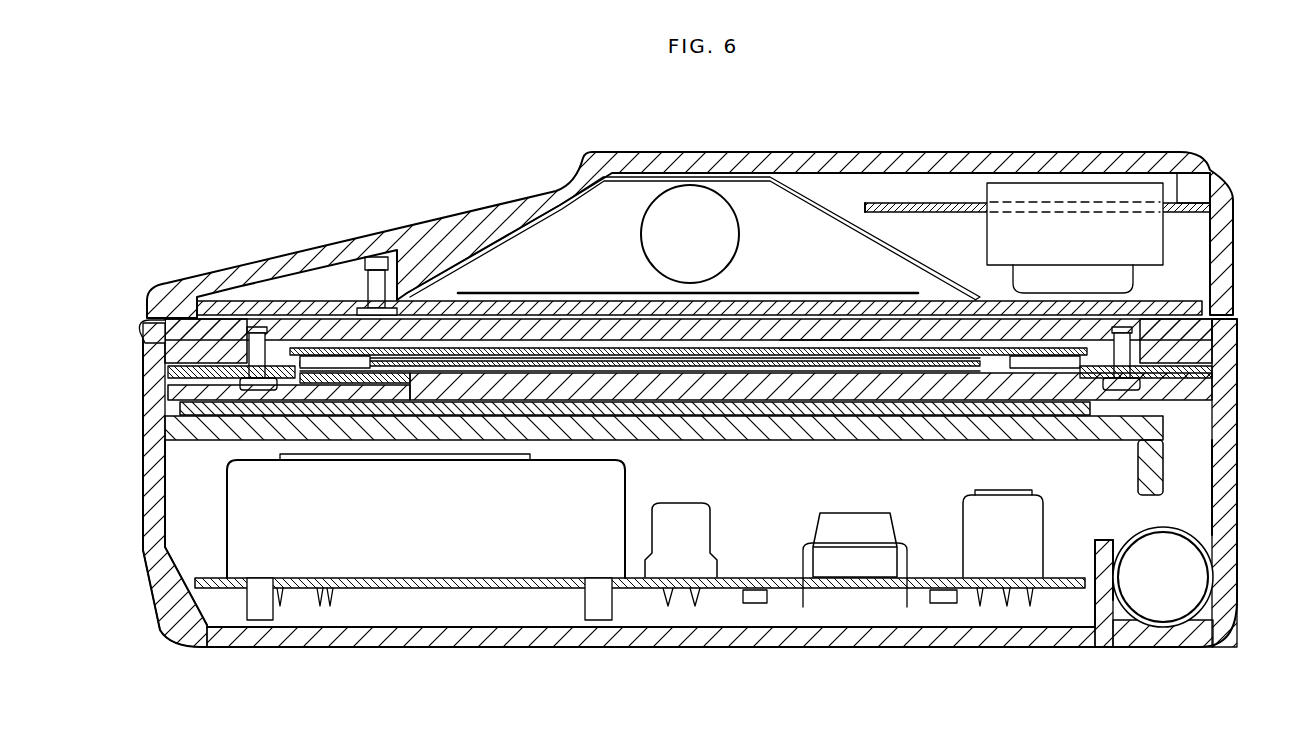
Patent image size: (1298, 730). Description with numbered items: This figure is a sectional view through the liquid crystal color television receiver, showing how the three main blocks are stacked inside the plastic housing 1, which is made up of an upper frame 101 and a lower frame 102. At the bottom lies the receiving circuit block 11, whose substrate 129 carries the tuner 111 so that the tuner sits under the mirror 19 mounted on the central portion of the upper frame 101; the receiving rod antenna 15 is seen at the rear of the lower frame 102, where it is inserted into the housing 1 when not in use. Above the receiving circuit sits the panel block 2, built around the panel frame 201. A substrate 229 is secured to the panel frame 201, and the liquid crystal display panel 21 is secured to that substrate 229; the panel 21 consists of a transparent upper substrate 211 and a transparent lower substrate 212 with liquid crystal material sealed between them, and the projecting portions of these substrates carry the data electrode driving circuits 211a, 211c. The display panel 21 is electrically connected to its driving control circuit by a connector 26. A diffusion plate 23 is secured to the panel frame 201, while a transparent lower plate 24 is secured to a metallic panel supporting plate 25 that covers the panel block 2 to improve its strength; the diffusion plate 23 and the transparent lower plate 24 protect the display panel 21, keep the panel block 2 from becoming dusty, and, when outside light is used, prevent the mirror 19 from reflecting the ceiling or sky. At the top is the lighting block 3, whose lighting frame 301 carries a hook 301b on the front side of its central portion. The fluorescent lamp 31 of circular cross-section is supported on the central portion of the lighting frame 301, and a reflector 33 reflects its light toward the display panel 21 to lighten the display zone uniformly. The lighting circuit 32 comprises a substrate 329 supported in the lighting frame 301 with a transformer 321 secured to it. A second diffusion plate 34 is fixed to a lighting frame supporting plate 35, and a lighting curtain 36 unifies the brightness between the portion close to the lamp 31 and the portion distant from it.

The housing 1 is at (721, 648).
The panel block 2 is at (1238, 381).
The lighting block 3 is at (845, 155).
The receiving circuit block 11 is at (745, 578).
The receiving rod antenna 15 is at (1198, 579).
The mirror 19 is at (805, 410).
The liquid crystal display panel 21 is at (735, 347).
The diffusion plate 23 is at (832, 332).
The transparent lower plate 24 is at (688, 392).
The panel supporting plate 25 is at (392, 384).
The connector 26 is at (287, 352).
The fluorescent lamp 31 is at (695, 190).
The lighting circuit 32 is at (925, 204).
The reflector 33 is at (643, 170).
The diffusion plate 34 is at (518, 302).
The lighting frame supporting plate 35 is at (322, 305).
The lighting curtain 36 is at (566, 292).
The upper frame 101 is at (890, 428).
The lower frame 102 is at (937, 640).
The tuner 111 is at (462, 568).
The substrate 129 is at (850, 590).
The panel frame 201 is at (150, 360).
The transparent upper substrate 211 is at (790, 360).
The data electrode driving circuit 211a is at (1043, 366).
The data electrode driving circuit 211c is at (325, 366).
The transparent lower substrate 212 is at (757, 363).
The substrate 229 is at (170, 373).
The lighting frame 301 is at (1022, 158).
The hook 301b is at (145, 333).
The transformer 321 is at (1158, 242).
The substrate 329 is at (905, 213).